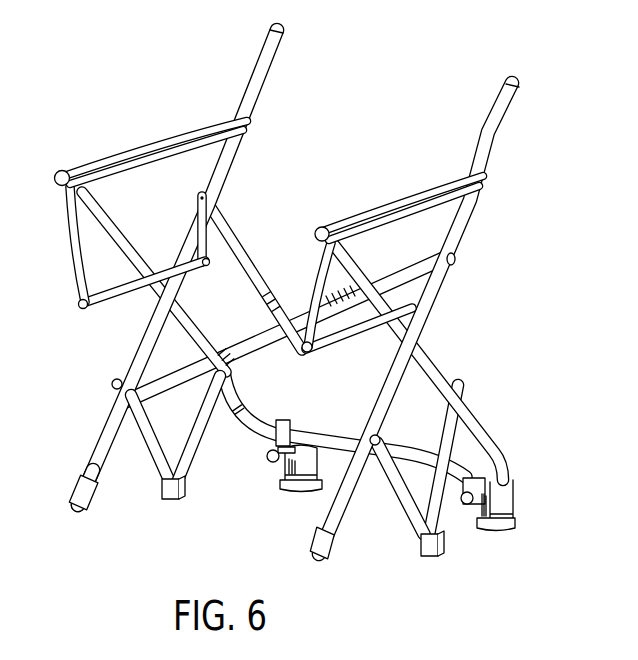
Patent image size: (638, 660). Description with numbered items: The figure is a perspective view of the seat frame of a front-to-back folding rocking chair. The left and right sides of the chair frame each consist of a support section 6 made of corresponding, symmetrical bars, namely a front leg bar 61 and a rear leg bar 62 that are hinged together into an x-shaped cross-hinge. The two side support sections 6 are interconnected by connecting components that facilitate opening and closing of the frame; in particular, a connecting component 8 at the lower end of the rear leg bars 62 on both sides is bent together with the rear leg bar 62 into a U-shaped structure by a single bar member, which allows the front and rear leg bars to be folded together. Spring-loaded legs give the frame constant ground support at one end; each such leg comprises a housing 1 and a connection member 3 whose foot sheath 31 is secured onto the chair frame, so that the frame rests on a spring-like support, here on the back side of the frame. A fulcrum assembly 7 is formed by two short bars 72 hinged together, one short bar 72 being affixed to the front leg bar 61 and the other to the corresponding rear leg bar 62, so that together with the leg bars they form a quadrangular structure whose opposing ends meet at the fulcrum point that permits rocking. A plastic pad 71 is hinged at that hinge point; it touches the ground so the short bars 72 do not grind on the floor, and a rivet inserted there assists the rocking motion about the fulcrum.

The housing 1 is at (516, 491).
The connection member 3 is at (273, 466).
The foot sheath 31 is at (281, 421).
The support section 6 is at (97, 406).
The front leg bar 61 is at (88, 456).
The rear leg bar 62 is at (194, 331).
The fulcrum assembly 7 is at (155, 487).
The plastic pad 71 is at (445, 551).
The short bar 72 is at (411, 498).
The connecting component 8 is at (406, 446).